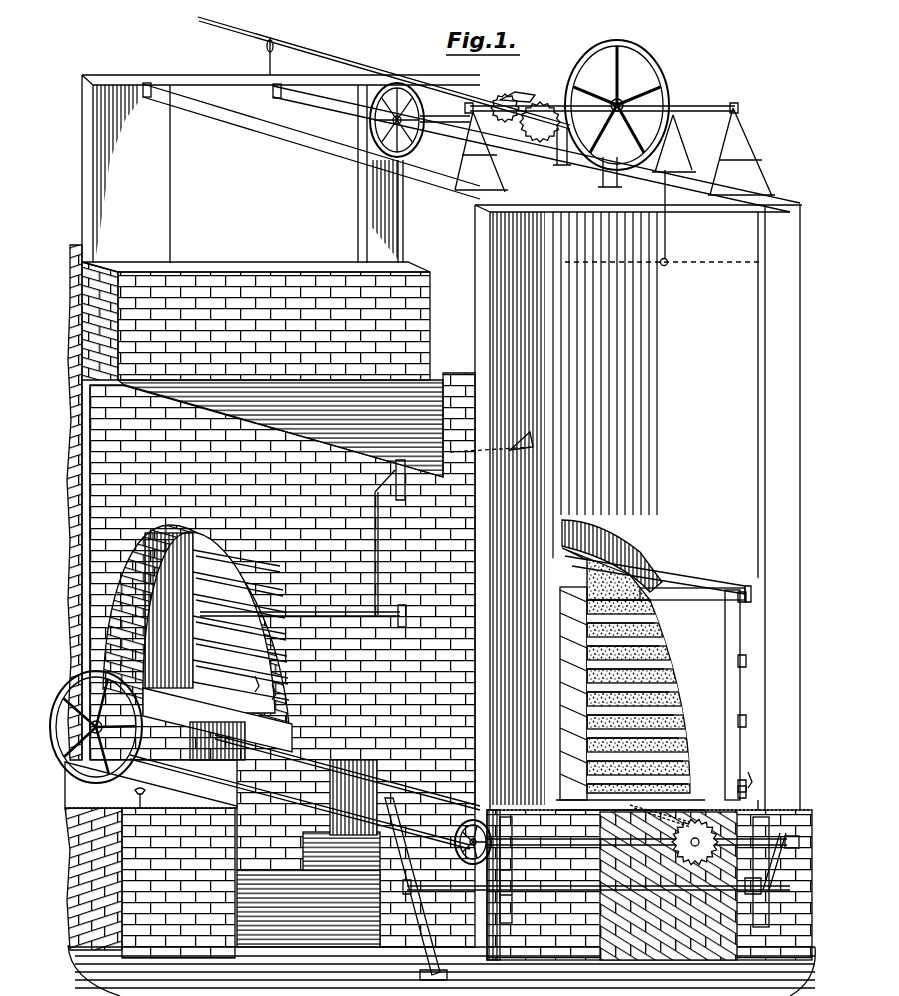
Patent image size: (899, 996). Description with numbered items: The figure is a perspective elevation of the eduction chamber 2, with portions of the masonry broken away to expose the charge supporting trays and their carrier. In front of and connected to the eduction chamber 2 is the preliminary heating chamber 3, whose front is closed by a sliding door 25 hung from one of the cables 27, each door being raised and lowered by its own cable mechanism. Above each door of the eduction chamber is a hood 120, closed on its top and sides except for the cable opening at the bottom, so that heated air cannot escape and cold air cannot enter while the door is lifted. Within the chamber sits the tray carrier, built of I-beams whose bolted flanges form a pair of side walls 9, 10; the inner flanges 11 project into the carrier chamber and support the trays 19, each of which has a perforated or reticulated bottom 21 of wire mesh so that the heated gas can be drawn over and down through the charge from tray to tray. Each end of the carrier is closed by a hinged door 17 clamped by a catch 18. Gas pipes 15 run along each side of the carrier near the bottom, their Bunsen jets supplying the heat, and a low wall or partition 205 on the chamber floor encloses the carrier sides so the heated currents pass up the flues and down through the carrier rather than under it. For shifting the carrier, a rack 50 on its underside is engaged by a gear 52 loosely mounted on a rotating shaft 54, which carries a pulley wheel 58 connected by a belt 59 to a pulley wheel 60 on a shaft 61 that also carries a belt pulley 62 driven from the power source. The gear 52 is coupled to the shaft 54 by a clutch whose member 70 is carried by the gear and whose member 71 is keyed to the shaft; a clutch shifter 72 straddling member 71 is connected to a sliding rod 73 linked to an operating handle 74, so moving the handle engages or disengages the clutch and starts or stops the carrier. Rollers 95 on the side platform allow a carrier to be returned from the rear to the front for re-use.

The eduction chamber 2 is at (625, 556).
The preliminary heating chamber 3 is at (575, 594).
The side wall 9 is at (742, 618).
The side wall 10 is at (576, 620).
The inner flanges 11 is at (578, 647).
The gas pipes 15 is at (752, 785).
The door 17 is at (443, 668).
The catch 18 is at (196, 630).
The trays 19 is at (585, 712).
The perforated or reticulated bottom 21 is at (640, 590).
The door 25 is at (645, 566).
The cables 27 is at (274, 42).
The rack 50 is at (643, 830).
The gear 52 is at (672, 860).
The rotating shaft 54 is at (672, 842).
The pulley wheel 58 is at (470, 818).
The belt 59 is at (455, 800).
The pulley wheel 60 is at (151, 785).
The shaft 61 is at (96, 732).
The belt pulley 62 is at (154, 798).
The clutch member 70 is at (700, 800).
The clutch member 71 is at (765, 818).
The clutch shifter 72 is at (680, 880).
The sliding rod 73 is at (508, 896).
The operating handle 74 is at (383, 805).
The rollers 95 is at (178, 883).
The hood 120 is at (442, 442).
The low wall or partition 205 is at (217, 718).